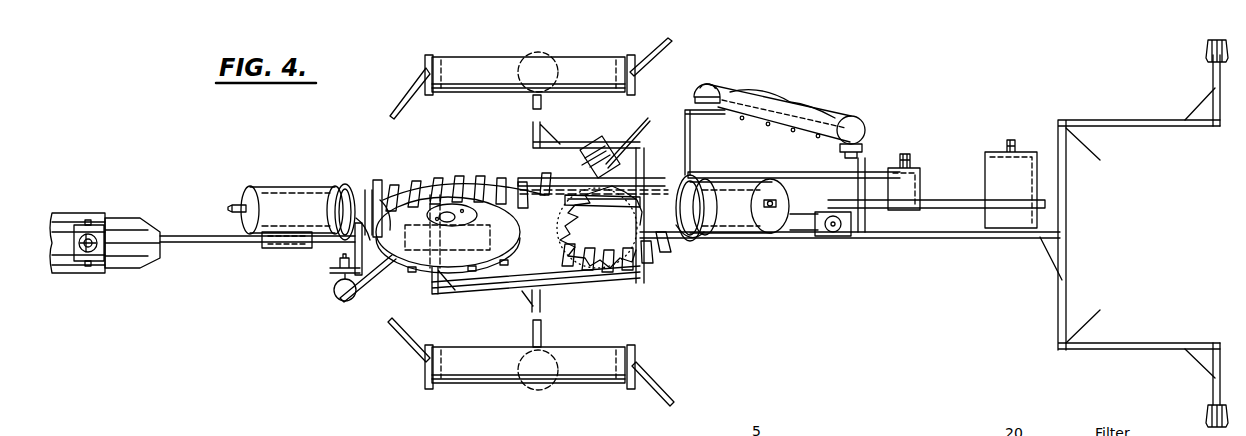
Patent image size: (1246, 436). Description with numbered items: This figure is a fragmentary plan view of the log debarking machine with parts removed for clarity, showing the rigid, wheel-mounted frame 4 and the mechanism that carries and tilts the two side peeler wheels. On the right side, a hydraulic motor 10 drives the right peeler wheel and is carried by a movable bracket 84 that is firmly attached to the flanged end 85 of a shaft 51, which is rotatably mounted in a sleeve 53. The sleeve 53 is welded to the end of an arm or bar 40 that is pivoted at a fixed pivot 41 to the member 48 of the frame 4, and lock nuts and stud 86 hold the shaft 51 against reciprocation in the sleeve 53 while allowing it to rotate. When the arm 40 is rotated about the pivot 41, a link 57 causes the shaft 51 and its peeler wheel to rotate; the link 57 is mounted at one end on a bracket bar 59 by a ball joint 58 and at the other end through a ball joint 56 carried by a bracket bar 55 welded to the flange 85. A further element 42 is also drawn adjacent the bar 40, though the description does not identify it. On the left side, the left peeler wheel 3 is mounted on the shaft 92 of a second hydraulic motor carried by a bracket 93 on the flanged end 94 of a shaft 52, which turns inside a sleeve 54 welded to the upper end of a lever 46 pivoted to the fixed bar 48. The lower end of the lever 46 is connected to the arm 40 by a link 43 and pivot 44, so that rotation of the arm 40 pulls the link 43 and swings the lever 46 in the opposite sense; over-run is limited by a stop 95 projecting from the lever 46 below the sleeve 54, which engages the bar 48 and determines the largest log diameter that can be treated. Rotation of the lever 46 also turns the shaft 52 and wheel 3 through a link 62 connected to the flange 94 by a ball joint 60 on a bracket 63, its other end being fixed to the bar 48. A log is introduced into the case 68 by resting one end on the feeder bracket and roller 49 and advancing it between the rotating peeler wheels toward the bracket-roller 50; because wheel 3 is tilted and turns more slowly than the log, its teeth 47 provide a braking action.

The left peeler wheel 3 is at (488, 205).
The frame 4 is at (533, 131).
The hydraulic motor 10 is at (604, 198).
The arm or bar 40 is at (972, 203).
The pivot 41 is at (1019, 236).
The housing 42 is at (915, 182).
The link 43 is at (830, 174).
The pivot 44 is at (396, 185).
The lever 46 is at (368, 200).
The teeth 47 is at (483, 182).
The member or fixed bar of frame 48 is at (734, 238).
The feeder bracket and roller 49 is at (611, 362).
The bracket-roller 50 is at (604, 58).
The shaft 51 is at (692, 186).
The shaft 52 is at (342, 188).
The sleeve 53 is at (762, 188).
The sleeve 54 is at (296, 186).
The bracket bar 55 is at (692, 143).
The ball joint 56 is at (700, 104).
The link or linkage 57 is at (782, 118).
The ball joint 58 is at (866, 131).
The bracket bar 59 is at (862, 174).
The ball joint 60 is at (341, 294).
The link 62 is at (362, 282).
The bracket 63 is at (338, 270).
The case 68 is at (532, 185).
The movable bracket 84 is at (593, 222).
The flanged end 85 is at (690, 236).
The lock nuts and stud 86 is at (240, 203).
The shaft 92 is at (458, 218).
The bracket 93 is at (386, 180).
The flanged end 94 is at (370, 190).
The stop 95 is at (287, 250).